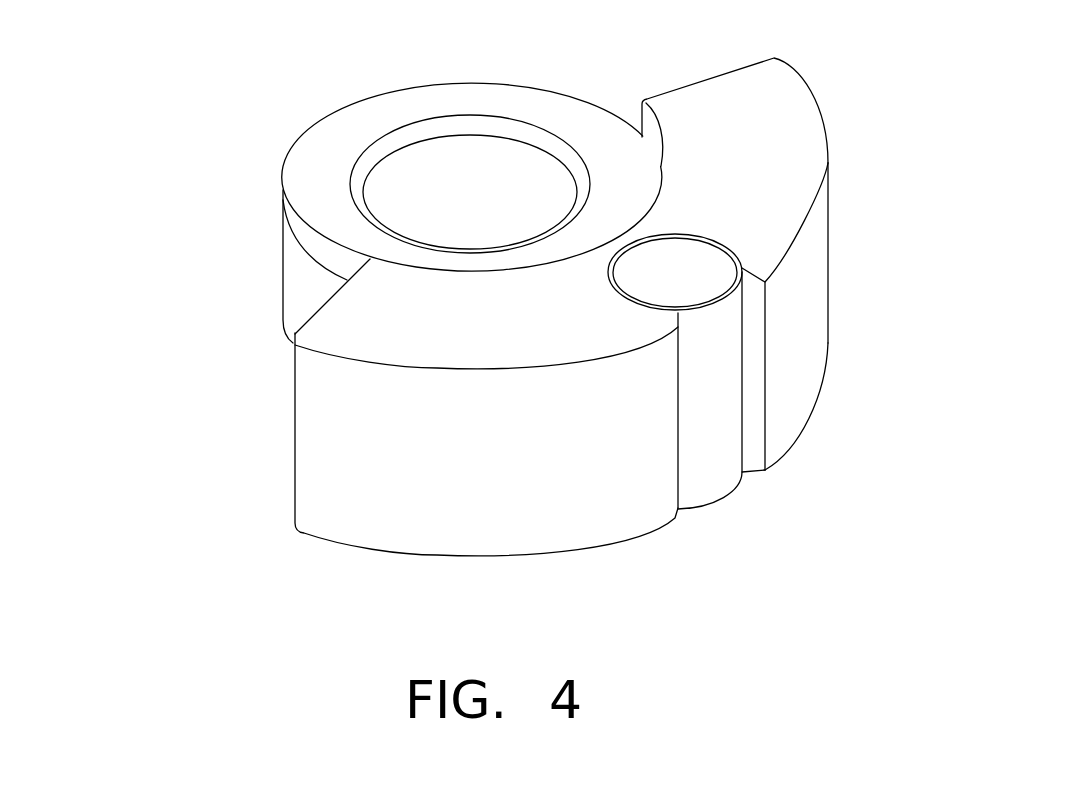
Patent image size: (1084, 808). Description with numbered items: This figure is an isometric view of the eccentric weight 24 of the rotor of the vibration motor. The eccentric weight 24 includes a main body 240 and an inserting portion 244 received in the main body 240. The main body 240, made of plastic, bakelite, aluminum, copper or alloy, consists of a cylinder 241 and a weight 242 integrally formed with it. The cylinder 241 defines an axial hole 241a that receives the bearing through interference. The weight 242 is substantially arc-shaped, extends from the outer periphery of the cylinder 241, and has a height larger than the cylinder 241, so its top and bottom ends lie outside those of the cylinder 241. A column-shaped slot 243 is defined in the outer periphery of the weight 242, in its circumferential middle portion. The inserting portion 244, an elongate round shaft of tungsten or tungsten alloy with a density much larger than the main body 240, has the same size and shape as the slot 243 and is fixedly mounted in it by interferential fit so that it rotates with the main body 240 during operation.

The eccentric weight 24 is at (495, 321).
The main body 240 is at (439, 286).
The cylinder 241 is at (485, 179).
The axial hole 241a is at (468, 187).
The weight 242 is at (410, 441).
The column-shaped slot 243 is at (682, 512).
The inserting portion 244 is at (703, 457).